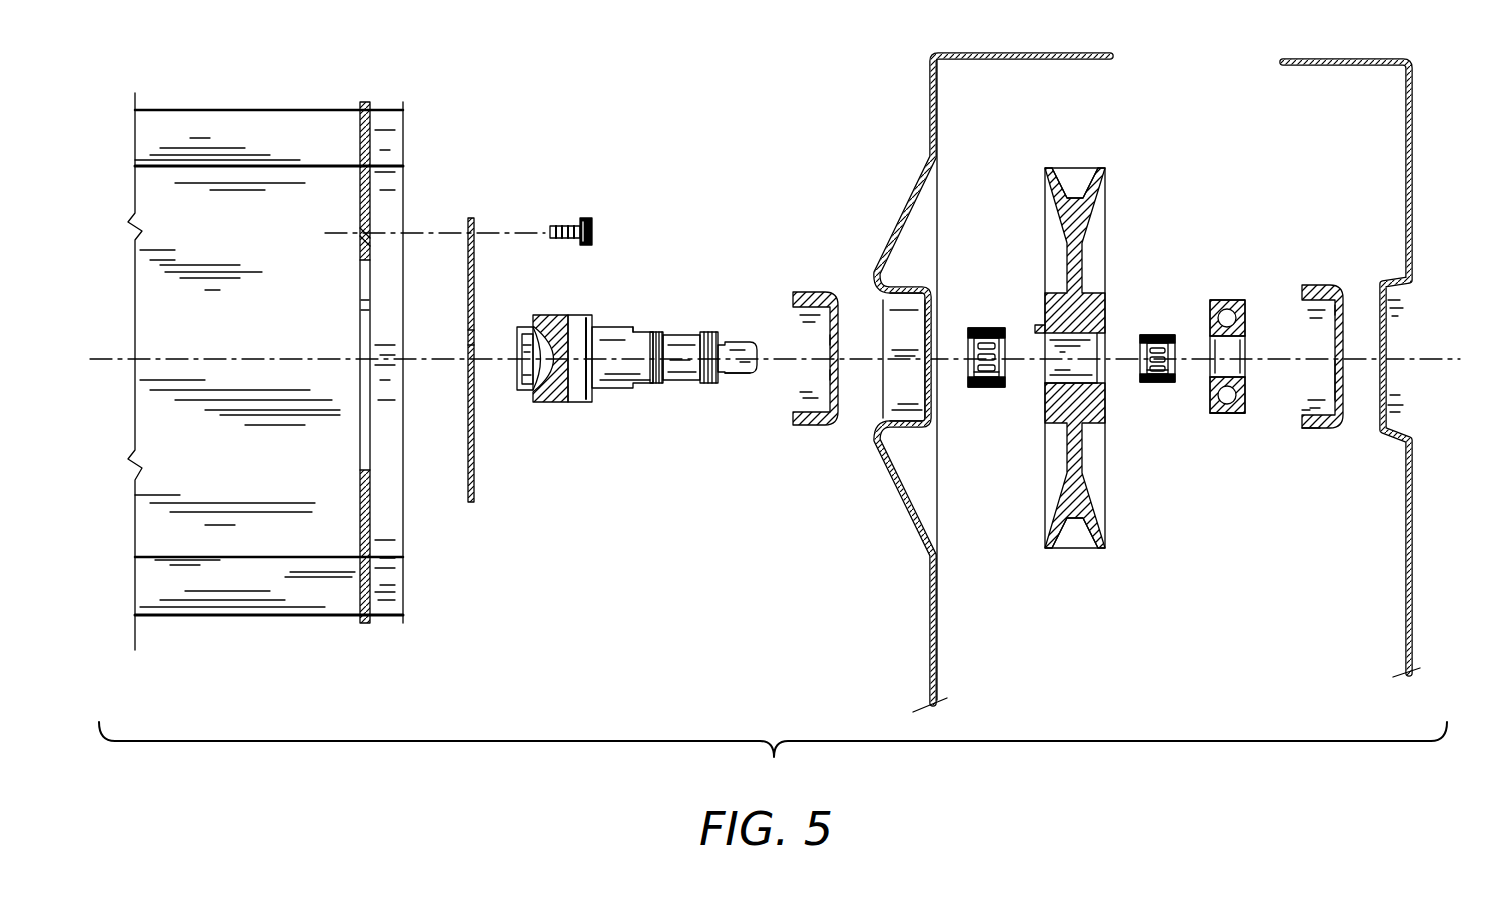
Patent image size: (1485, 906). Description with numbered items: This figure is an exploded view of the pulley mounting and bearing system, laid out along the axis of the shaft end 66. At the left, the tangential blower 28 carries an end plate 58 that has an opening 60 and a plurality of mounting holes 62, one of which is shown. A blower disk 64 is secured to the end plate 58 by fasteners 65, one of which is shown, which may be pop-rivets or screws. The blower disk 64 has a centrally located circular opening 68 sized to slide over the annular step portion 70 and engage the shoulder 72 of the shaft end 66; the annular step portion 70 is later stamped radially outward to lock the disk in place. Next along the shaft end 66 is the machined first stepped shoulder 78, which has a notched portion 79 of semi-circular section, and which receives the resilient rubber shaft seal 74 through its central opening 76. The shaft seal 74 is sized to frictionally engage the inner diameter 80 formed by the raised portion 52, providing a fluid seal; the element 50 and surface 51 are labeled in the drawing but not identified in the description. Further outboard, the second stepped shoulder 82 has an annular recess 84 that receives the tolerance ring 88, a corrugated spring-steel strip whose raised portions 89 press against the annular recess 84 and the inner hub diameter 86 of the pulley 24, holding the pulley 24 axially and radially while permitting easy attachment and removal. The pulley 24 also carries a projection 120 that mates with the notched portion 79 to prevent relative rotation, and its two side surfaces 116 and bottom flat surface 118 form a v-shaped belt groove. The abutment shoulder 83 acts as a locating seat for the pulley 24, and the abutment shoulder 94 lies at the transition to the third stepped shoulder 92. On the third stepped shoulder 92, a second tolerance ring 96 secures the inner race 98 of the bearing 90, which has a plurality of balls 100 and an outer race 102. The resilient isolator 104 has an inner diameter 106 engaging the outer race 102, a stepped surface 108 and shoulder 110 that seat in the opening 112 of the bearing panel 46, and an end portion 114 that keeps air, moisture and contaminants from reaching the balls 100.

The tangential blower 28 is at (266, 133).
The end plate 58 is at (372, 198).
The mounting holes 62 is at (360, 233).
The opening 60 is at (360, 307).
The blower disk 64 is at (475, 262).
The opening 68 is at (468, 340).
The fasteners 65 is at (573, 222).
The shaft end 66 is at (590, 316).
The annular step portion 70 is at (525, 392).
The shoulder 72 is at (540, 318).
The first stepped shoulder 78 is at (615, 390).
The notched portion 79 is at (636, 330).
The abutment shoulder 83 is at (656, 386).
The annular recess 84 is at (683, 335).
The second stepped shoulder 82 is at (708, 386).
The third stepped shoulder 92 is at (738, 343).
The abutment shoulder 94 is at (735, 375).
The shaft seal 74 is at (812, 292).
The central opening 76 is at (834, 400).
The bracket 50 is at (908, 218).
The raised portion 52 is at (936, 290).
The surface 51 is at (926, 334).
The inner diameter 80 is at (905, 420).
The tolerance ring 88 is at (983, 328).
The raised portions 89 is at (993, 388).
The pulley 24 is at (1107, 188).
The side surfaces 116 is at (1075, 195).
The bottom flat surface 118 is at (1073, 521).
The projection 120 is at (1040, 327).
The inner hub diameter 86 is at (1098, 376).
The tolerance ring 96 is at (1157, 335).
The bearing 90 is at (1225, 300).
The balls 100 is at (1236, 316).
The inner race 98 is at (1236, 394).
The outer race 102 is at (1228, 413).
The isolator 104 is at (1306, 290).
The stepped surface 108 is at (1336, 296).
The inner diameter 106 is at (1305, 418).
The shoulder 110 is at (1318, 430).
The end portion 114 is at (1345, 385).
The bearing panel 46 is at (1413, 152).
The opening 112 is at (1412, 292).